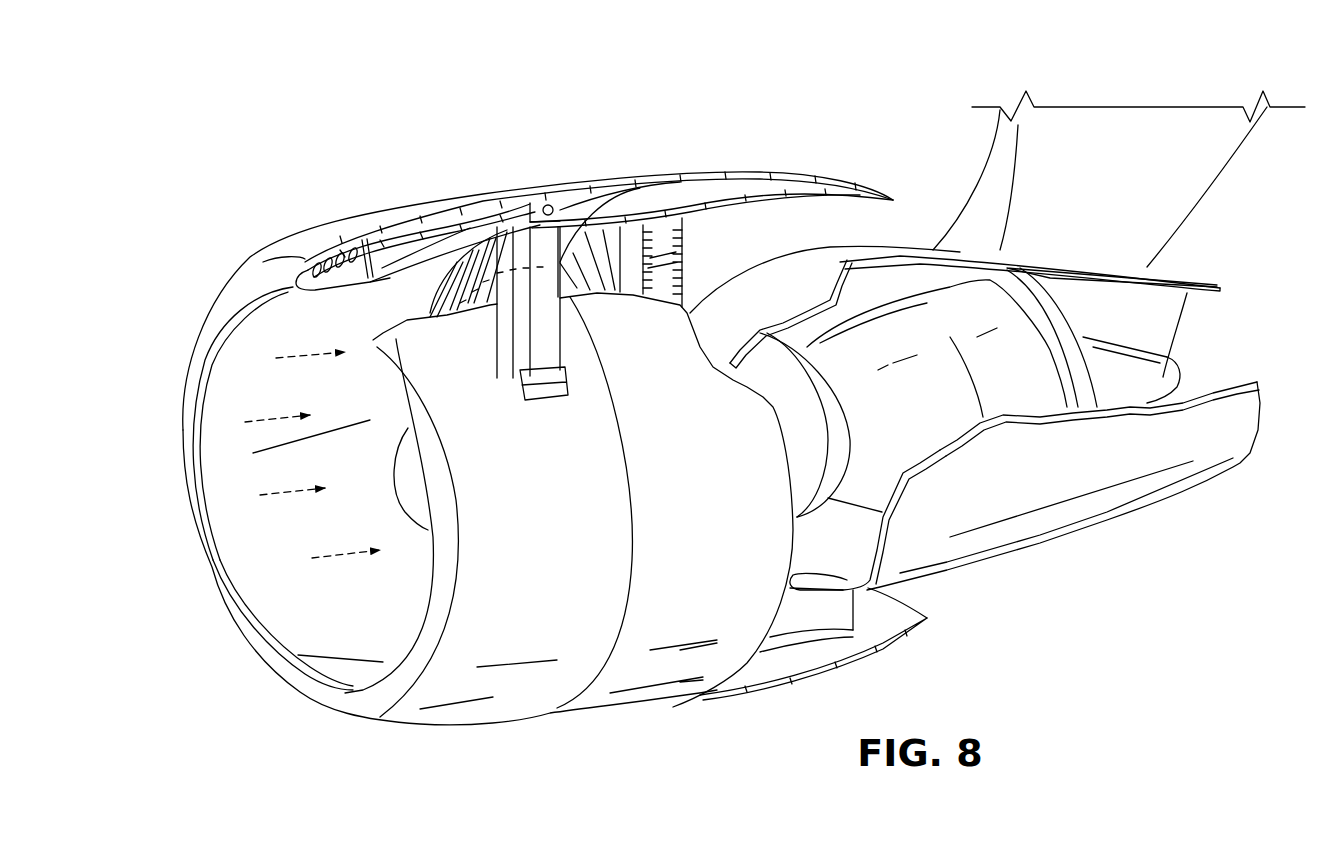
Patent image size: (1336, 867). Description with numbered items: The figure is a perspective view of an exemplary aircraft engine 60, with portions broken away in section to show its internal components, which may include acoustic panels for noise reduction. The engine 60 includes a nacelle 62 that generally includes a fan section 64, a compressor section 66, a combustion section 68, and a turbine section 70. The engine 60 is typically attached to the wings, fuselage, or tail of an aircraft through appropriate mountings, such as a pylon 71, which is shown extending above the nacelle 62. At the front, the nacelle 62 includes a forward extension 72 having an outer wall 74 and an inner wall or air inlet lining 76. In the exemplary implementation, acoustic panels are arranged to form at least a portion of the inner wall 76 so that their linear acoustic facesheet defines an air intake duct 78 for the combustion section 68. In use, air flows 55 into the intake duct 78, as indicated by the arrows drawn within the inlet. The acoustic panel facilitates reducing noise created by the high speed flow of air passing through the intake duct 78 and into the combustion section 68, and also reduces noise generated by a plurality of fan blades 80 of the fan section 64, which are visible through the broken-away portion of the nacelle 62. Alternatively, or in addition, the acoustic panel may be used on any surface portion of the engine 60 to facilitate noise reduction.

The air flows 55 is at (290, 358).
The aircraft engine 60 is at (311, 146).
The nacelle 62 is at (645, 707).
The fan section 64 is at (616, 168).
The compressor section 66 is at (737, 316).
The combustion section 68 is at (858, 284).
The turbine section 70 is at (884, 428).
The pylon 71 is at (1200, 185).
The forward extension 72 is at (410, 746).
The outer wall 74 is at (492, 729).
The inner wall or air inlet lining 76 is at (207, 452).
The air intake duct 78 is at (276, 592).
The fan blades 80 is at (548, 300).